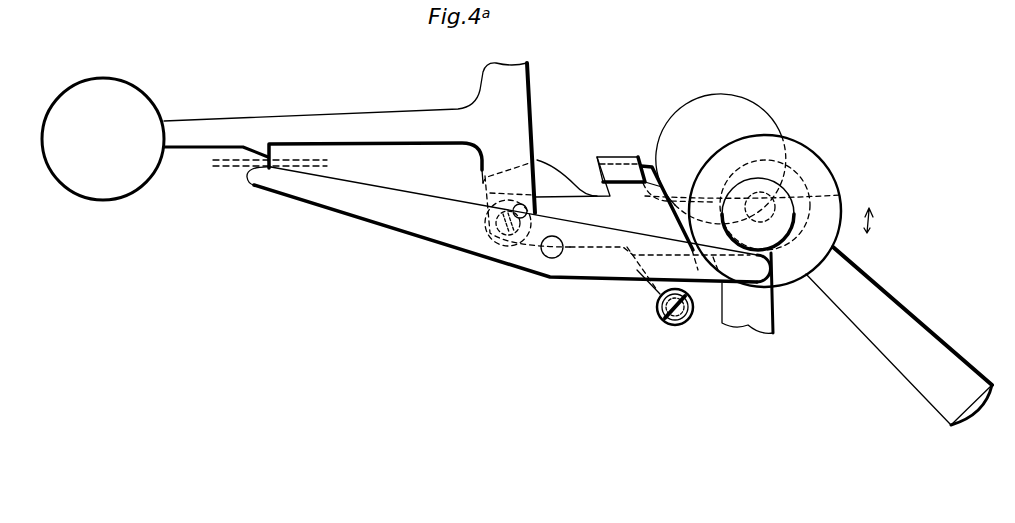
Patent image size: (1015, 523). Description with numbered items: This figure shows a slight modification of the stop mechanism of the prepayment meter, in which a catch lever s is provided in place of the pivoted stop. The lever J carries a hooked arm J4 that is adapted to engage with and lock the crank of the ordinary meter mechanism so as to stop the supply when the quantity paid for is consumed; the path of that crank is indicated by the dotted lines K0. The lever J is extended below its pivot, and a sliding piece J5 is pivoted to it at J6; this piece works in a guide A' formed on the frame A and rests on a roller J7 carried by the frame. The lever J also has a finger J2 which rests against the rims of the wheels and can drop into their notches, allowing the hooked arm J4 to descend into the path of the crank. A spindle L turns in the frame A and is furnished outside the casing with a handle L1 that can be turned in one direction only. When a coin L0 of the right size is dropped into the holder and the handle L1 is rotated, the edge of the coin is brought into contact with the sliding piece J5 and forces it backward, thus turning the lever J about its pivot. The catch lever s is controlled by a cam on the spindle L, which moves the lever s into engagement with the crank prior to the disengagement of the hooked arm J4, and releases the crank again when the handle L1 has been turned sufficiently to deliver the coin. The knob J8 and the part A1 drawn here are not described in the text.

The knob J8 is at (103, 139).
The hooked arm J4 is at (345, 123).
The lever J is at (514, 138).
The path of the crank K0 is at (279, 171).
The catch lever s is at (510, 250).
The pivot of the sliding piece J6 is at (519, 211).
The frame A is at (567, 178).
The catch A1 is at (616, 171).
The sliding piece J5 is at (580, 186).
The guide A' is at (549, 272).
The roller J7 is at (658, 312).
The coin L0 is at (737, 106).
The spindle L is at (840, 196).
The finger J2 is at (753, 212).
The handle L1 is at (899, 336).